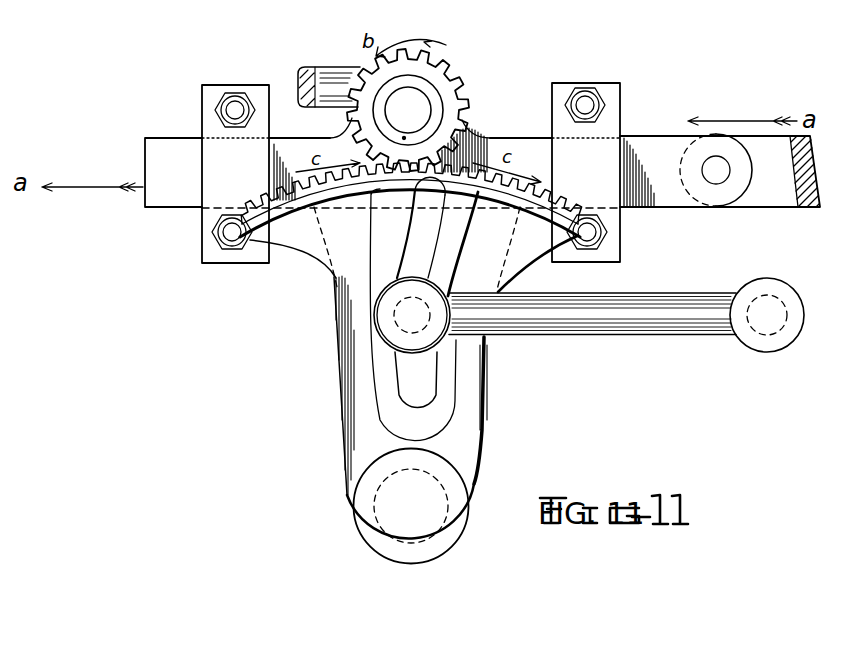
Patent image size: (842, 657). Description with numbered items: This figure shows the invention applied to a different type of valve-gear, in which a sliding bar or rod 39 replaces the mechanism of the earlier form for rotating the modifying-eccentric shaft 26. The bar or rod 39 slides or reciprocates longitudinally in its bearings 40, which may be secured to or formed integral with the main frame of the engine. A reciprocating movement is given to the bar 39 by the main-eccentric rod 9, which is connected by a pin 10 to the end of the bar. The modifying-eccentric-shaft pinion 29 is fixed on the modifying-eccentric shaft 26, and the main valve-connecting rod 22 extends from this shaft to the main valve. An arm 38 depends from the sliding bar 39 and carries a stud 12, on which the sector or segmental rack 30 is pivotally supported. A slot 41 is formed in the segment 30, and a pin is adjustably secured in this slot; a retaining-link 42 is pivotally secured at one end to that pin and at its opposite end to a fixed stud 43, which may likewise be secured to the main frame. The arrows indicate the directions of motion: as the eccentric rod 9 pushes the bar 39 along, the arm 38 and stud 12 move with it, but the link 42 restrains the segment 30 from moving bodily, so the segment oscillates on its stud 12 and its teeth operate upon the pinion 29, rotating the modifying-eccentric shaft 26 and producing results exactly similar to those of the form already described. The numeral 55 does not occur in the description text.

The main-eccentric rod 9 is at (776, 207).
The pin 10 is at (718, 172).
The stud 12 is at (386, 504).
The main valve-connecting rod 22 is at (328, 70).
The modifying-eccentric shaft 26 is at (422, 108).
The modifying-eccentric-shaft pinion 29 is at (432, 66).
The sector or segmental rack 30 is at (259, 232).
The arm 38 is at (352, 362).
The sliding bar or rod 39 is at (160, 158).
The bearings 40 is at (212, 130).
The slot 41 is at (410, 252).
The retaining-link 42 is at (606, 338).
The fixed stud 43 is at (768, 320).
The boss 55 is at (403, 318).